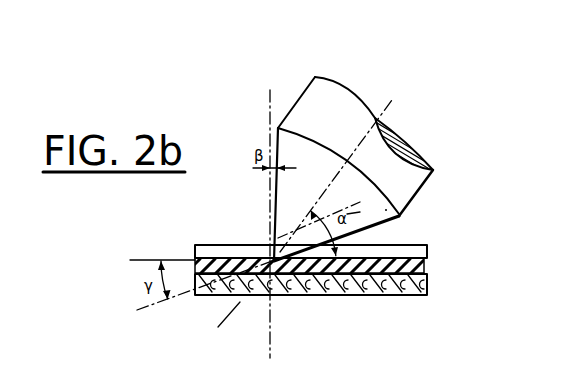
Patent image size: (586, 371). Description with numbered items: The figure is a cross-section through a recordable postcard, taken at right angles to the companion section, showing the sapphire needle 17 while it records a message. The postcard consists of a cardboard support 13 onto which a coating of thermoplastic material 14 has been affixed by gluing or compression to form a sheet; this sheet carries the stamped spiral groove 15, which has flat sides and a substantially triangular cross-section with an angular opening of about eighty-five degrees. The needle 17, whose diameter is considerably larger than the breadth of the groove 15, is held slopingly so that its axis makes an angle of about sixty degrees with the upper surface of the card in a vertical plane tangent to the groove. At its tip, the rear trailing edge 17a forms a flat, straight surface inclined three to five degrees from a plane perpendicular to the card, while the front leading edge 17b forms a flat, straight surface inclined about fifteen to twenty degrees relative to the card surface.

The sapphire needle 17 is at (347, 102).
The trailing edge of the needle tip 17a is at (273, 130).
The leading edge of the needle tip 17b is at (372, 227).
The spiral groove 15 is at (428, 253).
The thermoplastic material 14 is at (427, 268).
The cardboard support 13 is at (320, 288).